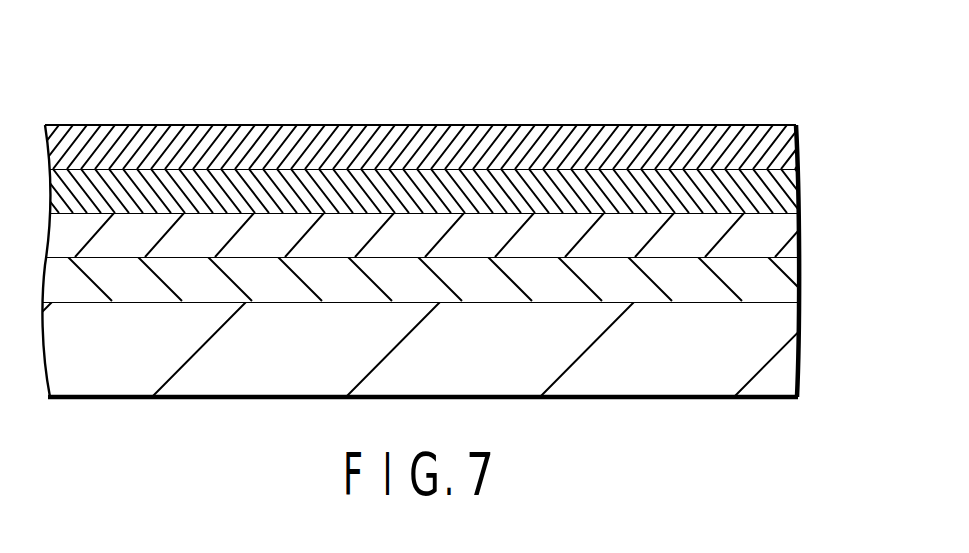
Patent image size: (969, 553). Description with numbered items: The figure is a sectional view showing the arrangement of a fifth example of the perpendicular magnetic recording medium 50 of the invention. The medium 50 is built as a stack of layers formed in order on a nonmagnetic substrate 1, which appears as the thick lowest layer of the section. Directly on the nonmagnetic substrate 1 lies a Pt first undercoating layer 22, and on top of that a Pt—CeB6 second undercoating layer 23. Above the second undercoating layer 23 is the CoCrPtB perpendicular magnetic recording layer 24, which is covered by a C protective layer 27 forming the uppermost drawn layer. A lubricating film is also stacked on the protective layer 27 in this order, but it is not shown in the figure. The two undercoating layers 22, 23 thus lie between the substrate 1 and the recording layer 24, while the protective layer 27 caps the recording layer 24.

The perpendicular magnetic recording medium 50 is at (484, 198).
The C protective layer 27 is at (783, 142).
The CoCrPtB perpendicular magnetic recording layer 24 is at (783, 189).
The Pt—CeB6 second undercoating layer 23 is at (788, 235).
The Pt first undercoating layer 22 is at (788, 282).
The nonmagnetic substrate 1 is at (782, 352).